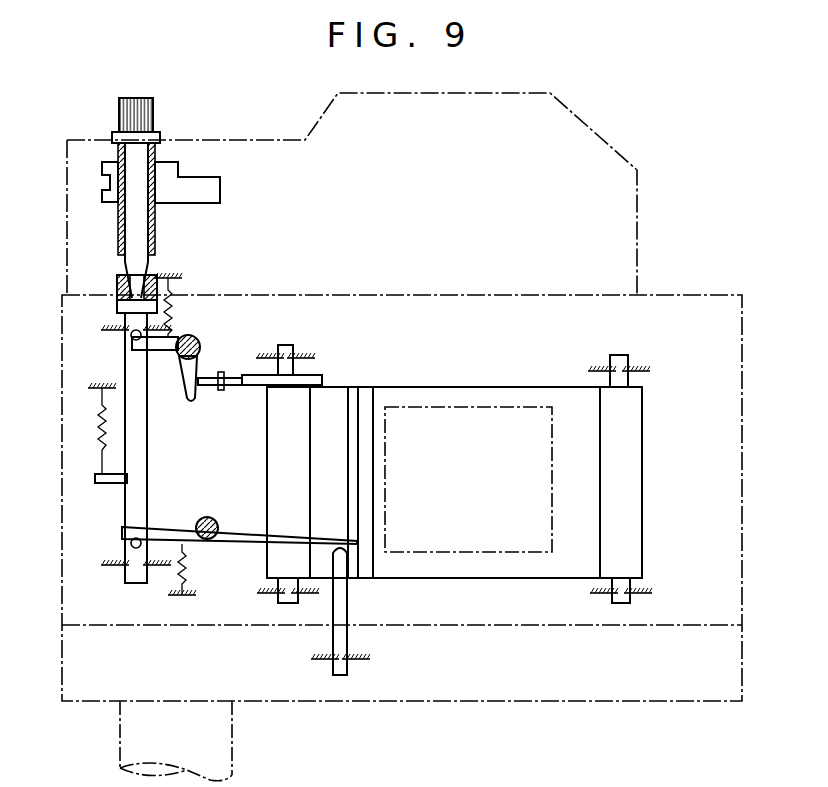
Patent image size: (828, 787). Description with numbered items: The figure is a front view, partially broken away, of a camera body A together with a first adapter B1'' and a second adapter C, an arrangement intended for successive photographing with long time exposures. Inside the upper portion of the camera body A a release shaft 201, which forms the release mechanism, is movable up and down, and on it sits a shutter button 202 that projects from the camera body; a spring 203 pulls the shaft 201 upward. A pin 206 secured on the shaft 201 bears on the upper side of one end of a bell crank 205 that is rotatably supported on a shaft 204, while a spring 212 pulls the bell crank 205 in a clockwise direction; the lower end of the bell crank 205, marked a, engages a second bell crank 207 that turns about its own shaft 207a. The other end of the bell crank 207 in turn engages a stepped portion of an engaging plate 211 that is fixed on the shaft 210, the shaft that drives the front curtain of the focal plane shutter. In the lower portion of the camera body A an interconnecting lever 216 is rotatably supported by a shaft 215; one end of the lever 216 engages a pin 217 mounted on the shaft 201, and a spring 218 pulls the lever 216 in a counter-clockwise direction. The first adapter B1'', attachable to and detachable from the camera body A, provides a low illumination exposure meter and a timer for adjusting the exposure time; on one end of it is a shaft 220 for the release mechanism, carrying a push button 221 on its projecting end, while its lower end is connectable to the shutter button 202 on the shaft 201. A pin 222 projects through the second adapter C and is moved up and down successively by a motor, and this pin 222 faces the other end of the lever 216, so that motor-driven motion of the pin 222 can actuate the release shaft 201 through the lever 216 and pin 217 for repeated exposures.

The camera body A is at (742, 468).
The first adapter B1'' is at (377, 194).
The second adapter C is at (745, 690).
The knob 221 is at (155, 122).
The shaft for the release mechanism 220 is at (138, 152).
The shutter button 202 is at (117, 287).
The release shaft 201 is at (147, 456).
The pin 206 is at (131, 333).
The shaft 204 is at (190, 335).
The bell crank 205 is at (186, 378).
The lever end point a is at (189, 400).
The bell crank 207 is at (235, 375).
The shaft 207a is at (222, 390).
The engaging plate 211 is at (313, 375).
The spring 212 is at (172, 300).
The spring 203 is at (100, 430).
The shaft 210 is at (278, 481).
The shaft 215 is at (216, 541).
The interconnecting lever 216 is at (242, 533).
The pin 217 is at (130, 540).
The spring 218 is at (186, 578).
The pin 222 is at (340, 607).